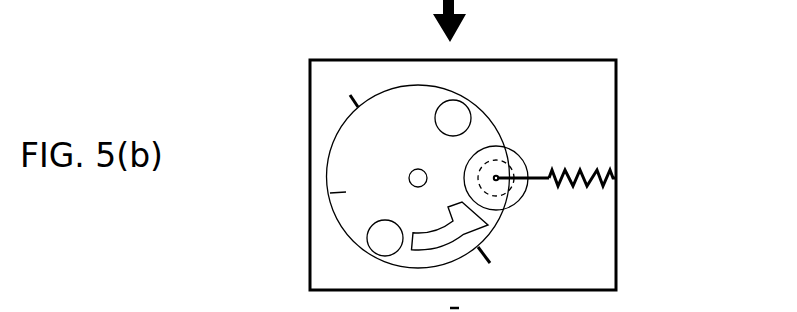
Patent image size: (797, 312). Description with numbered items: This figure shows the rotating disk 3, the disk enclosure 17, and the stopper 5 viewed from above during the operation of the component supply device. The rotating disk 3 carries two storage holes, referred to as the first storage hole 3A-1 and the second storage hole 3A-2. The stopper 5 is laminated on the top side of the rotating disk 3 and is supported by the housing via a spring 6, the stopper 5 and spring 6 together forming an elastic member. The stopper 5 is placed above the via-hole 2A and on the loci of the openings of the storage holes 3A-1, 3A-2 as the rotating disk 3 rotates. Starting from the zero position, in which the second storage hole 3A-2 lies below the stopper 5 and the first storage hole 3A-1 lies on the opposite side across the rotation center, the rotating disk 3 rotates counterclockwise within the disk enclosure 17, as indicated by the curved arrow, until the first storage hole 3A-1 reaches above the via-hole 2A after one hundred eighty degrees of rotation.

The rotating disk 3 is at (353, 152).
The first storage hole 3A-1 is at (385, 239).
The second storage hole 3A-2 is at (453, 118).
The via-hole 2A is at (516, 160).
The stopper 5 is at (520, 162).
The disk enclosure 17 is at (597, 127).
The spring 6 is at (595, 191).